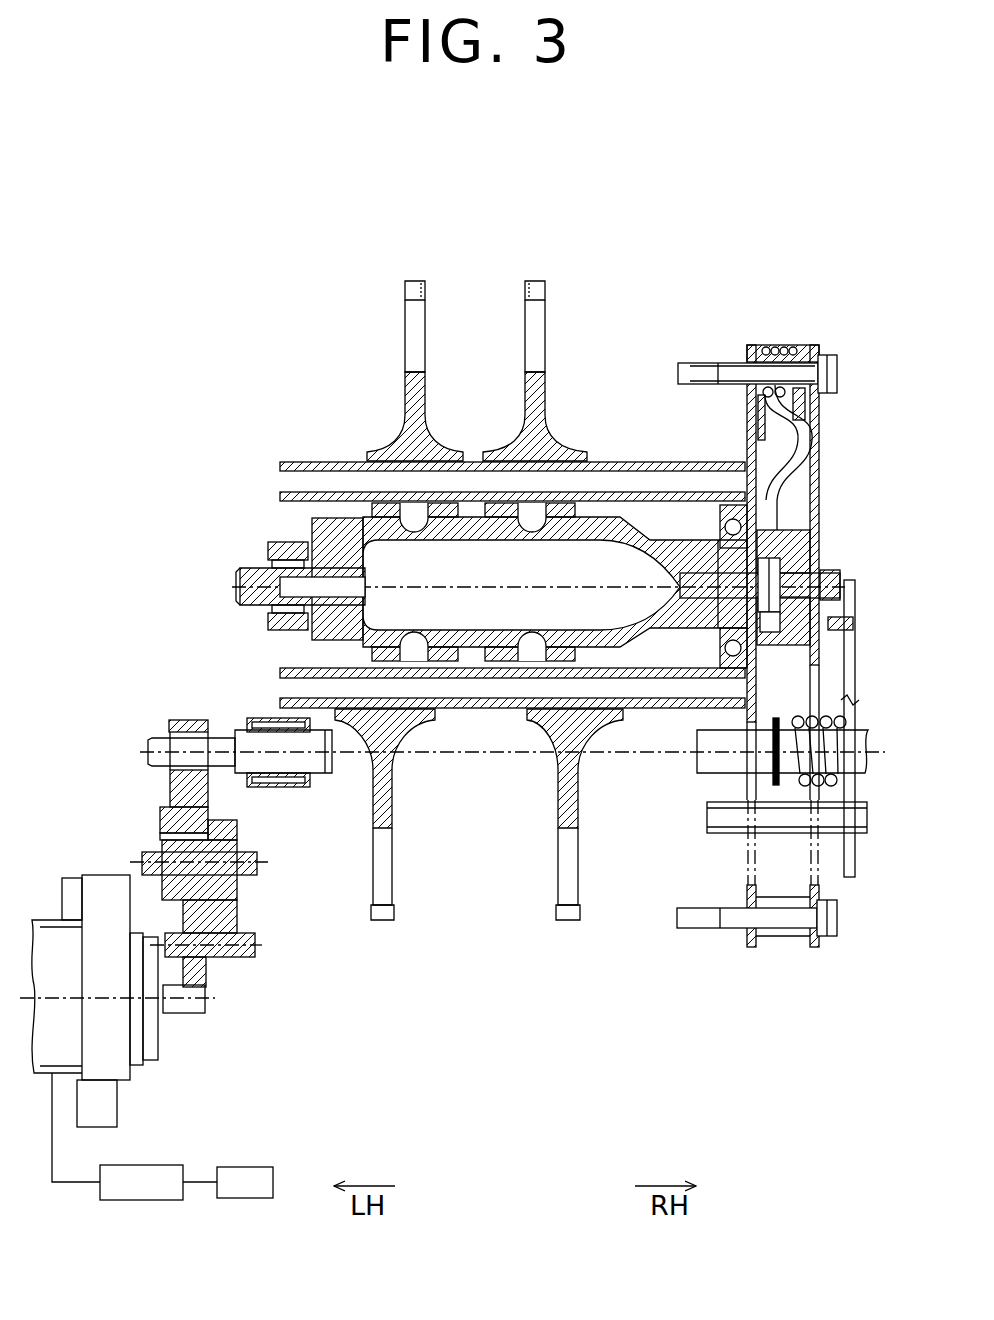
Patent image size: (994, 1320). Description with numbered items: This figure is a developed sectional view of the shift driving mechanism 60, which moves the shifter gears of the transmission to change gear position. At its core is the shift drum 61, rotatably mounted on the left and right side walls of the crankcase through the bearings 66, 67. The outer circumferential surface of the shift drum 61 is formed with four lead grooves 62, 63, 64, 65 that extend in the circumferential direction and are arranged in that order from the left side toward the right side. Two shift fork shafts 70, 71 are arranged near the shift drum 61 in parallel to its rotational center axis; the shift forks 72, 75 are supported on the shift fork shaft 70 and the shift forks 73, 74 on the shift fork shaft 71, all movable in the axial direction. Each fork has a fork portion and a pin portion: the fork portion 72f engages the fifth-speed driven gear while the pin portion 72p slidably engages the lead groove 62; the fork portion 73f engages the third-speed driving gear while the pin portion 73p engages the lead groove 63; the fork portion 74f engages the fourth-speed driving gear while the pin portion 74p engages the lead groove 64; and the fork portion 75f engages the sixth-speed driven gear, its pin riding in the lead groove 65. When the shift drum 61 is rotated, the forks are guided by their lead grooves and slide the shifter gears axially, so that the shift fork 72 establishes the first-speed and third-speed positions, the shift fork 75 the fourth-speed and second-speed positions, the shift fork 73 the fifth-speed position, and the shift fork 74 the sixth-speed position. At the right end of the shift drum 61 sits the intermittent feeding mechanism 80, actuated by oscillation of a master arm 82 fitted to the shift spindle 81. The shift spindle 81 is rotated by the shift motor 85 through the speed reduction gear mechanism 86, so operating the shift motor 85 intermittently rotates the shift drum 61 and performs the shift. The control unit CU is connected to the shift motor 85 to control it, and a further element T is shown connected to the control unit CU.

The shift driving mechanism 60 is at (240, 640).
The shift drum 61 is at (507, 591).
The lead groove 62 is at (380, 520).
The lead groove 63 is at (440, 656).
The lead groove 64 is at (522, 656).
The lead groove 65 is at (590, 515).
The bearing 66 is at (290, 542).
The bearing 67 is at (770, 560).
The shift fork shaft 70 is at (655, 710).
The shift fork shaft 71 is at (742, 460).
The shift fork 72 is at (408, 839).
The fork portion 72f is at (394, 905).
The pin portion 72p is at (370, 648).
The shift fork 73 is at (366, 359).
The fork portion 73f is at (405, 297).
The pin portion 73p is at (414, 522).
The shift fork 74 is at (570, 364).
The fork portion 74f is at (545, 297).
The pin portion 74p is at (530, 522).
The shift fork 75 is at (598, 839).
The fork portion 75f is at (580, 905).
The intermittent feeding mechanism 80 is at (878, 742).
The shift spindle 81 is at (312, 787).
The master arm 82 is at (858, 700).
The shift motor 85 is at (48, 900).
The speed reduction gear mechanism 86 is at (245, 900).
The control unit CU is at (153, 1165).
The shift switch T is at (262, 1167).